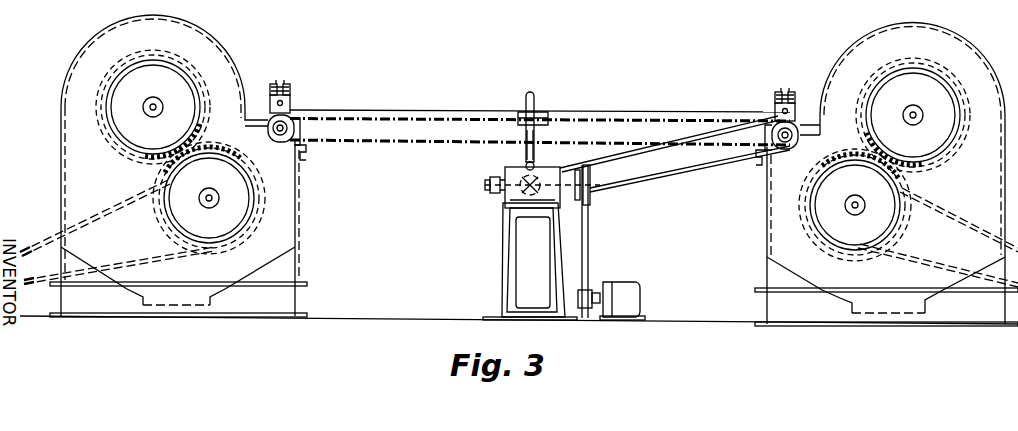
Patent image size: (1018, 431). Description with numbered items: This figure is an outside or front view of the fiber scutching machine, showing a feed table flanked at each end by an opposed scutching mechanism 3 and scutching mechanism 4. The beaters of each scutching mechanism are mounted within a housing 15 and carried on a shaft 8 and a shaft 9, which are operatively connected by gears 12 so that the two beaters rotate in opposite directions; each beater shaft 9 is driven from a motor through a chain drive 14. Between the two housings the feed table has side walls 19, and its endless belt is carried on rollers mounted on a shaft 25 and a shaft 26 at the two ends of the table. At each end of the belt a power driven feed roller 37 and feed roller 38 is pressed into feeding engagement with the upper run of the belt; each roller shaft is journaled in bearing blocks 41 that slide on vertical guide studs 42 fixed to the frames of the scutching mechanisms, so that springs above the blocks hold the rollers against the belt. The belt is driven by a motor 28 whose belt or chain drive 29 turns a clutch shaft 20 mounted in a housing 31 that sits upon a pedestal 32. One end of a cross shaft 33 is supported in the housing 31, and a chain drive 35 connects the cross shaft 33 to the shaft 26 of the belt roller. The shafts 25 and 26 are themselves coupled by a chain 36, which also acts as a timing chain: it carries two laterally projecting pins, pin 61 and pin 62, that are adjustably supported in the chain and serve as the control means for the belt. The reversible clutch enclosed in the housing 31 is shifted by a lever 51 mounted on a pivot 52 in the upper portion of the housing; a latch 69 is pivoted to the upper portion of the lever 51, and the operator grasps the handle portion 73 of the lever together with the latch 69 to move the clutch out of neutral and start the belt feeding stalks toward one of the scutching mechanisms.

The scutching mechanism 3 is at (73, 62).
The scutching mechanism 4 is at (973, 30).
The shaft 8 is at (143, 108).
The shaft 9 is at (199, 199).
The gears 12 is at (214, 139).
The chain drive 14 is at (38, 245).
The housing 15 is at (60, 147).
The side walls 19 is at (446, 110).
The clutch shaft 20 is at (485, 185).
The shaft 25 is at (277, 144).
The shaft 26 is at (786, 150).
The motor 28 is at (632, 292).
The belt or chain drive 29 is at (590, 250).
The housing 31 is at (503, 197).
The pedestal 32 is at (503, 244).
The cross shaft 33 is at (525, 172).
The chain drive 35 is at (650, 180).
The chain 36 is at (389, 146).
The feed roller 37 is at (282, 83).
The feed roller 38 is at (788, 91).
The bearing blocks 41 is at (292, 98).
The vertical guide studs or pins 42 is at (273, 84).
The lever 51 is at (536, 140).
The pivot 52 is at (535, 166).
The pin 61 is at (307, 153).
The pin 62 is at (750, 158).
The latch 69 is at (527, 101).
The handle portion 73 is at (536, 97).